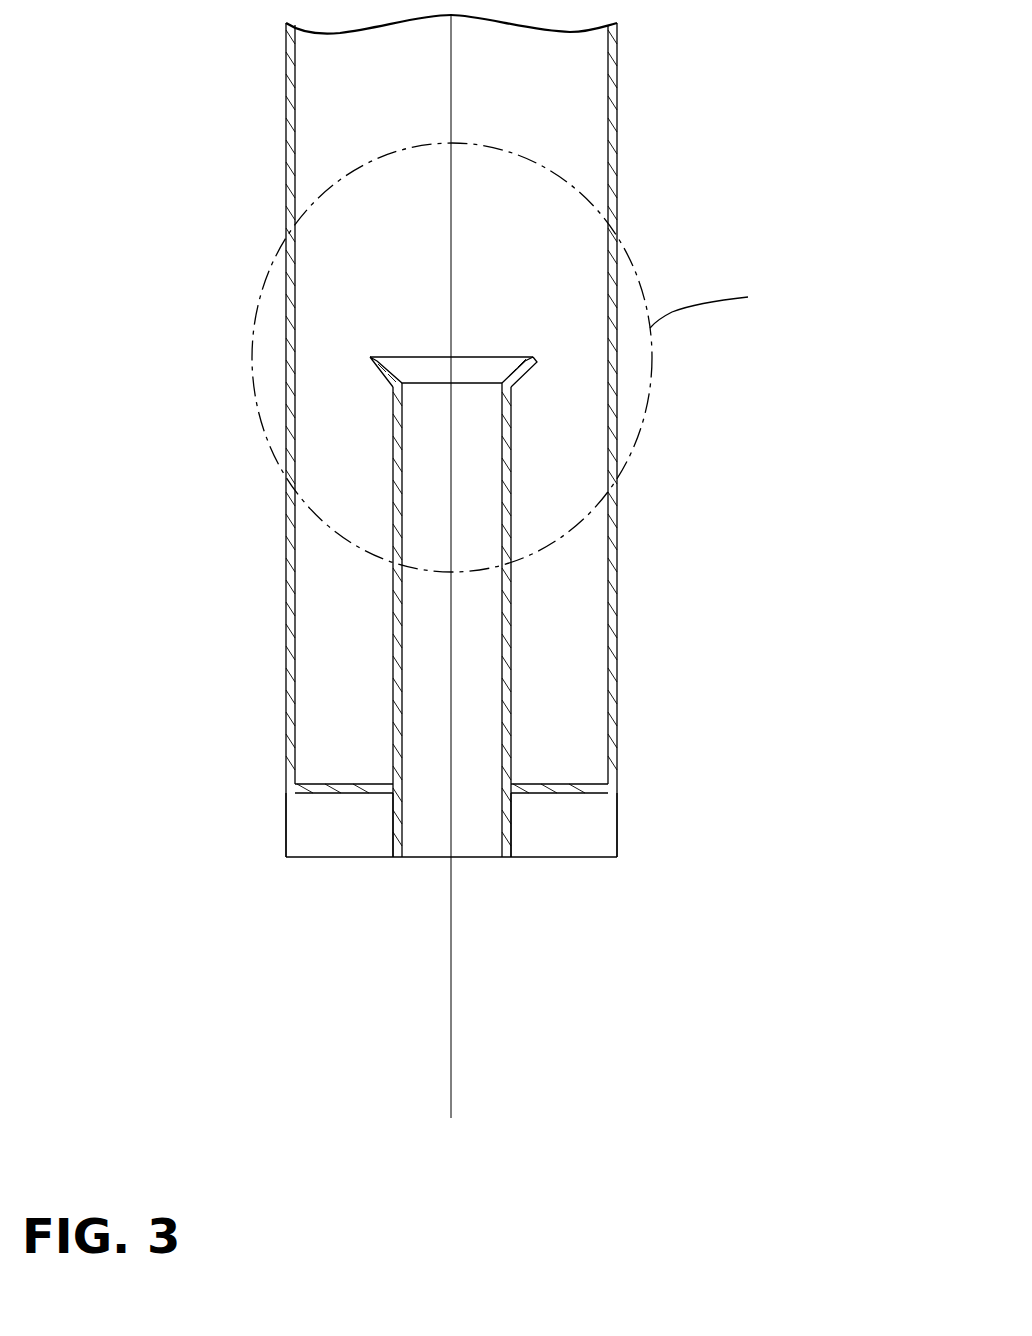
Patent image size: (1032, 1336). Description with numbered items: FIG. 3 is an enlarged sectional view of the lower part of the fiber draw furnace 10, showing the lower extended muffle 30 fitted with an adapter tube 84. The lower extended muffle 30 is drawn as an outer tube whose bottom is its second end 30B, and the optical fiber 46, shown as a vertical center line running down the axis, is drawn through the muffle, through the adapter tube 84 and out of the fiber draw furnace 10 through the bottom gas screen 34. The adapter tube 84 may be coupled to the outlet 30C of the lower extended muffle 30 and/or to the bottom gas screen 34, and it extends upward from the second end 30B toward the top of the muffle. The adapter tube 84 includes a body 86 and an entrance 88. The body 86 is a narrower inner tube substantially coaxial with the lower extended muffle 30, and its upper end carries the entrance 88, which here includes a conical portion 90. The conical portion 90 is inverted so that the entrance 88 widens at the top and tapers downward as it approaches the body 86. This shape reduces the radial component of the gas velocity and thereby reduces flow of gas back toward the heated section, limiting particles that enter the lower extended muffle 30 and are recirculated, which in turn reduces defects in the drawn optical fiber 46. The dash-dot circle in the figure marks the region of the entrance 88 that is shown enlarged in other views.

The fiber draw furnace 10 is at (793, 172).
The lower extended muffle 30 is at (622, 136).
The second end 30B is at (622, 601).
The outlet 30C is at (512, 798).
The bottom gas screen 34 is at (379, 858).
The optical fiber 46 is at (451, 1113).
The adapter tube 84 is at (512, 681).
The body 86 is at (393, 698).
The entrance 88 is at (364, 357).
The conical portion 90 is at (533, 366).